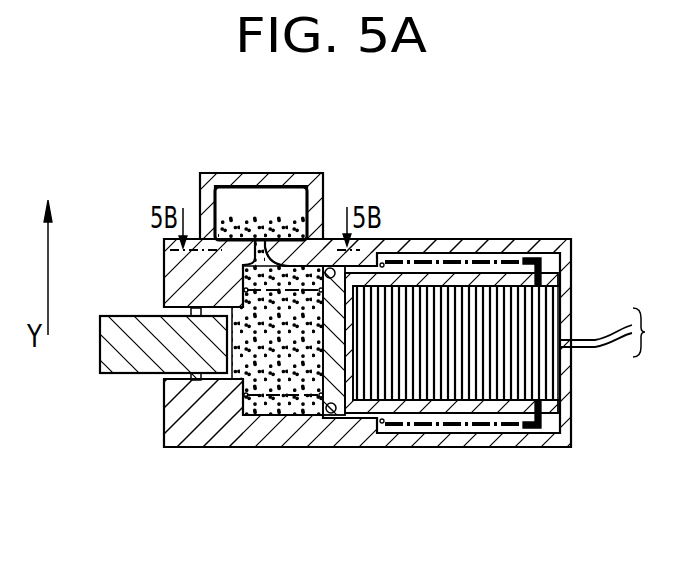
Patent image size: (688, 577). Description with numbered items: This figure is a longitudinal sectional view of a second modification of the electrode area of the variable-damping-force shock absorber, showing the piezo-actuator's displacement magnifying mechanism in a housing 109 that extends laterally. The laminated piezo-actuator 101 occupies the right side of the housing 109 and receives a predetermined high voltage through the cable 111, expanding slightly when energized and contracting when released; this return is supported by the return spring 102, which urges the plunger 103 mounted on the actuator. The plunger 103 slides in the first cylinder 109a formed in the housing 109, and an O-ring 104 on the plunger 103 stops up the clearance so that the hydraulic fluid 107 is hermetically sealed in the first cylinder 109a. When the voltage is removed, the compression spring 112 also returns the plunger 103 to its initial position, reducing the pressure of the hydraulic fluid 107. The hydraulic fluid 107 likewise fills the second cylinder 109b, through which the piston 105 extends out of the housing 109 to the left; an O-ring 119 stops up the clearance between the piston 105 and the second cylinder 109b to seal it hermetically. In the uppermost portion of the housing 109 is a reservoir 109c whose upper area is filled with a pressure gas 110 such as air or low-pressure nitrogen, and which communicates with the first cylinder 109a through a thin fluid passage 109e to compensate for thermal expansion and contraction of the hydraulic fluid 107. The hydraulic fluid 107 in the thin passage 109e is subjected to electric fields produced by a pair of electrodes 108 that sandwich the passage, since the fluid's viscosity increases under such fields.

The piezo-actuator 101 is at (530, 313).
The return spring 102 is at (508, 262).
The plunger 103 is at (392, 405).
The O-ring 104 is at (336, 416).
The piston 105 is at (130, 358).
The hydraulic fluid 107 is at (277, 372).
The electrodes 108 is at (250, 257).
The housing 109 is at (227, 440).
The first cylinder 109a is at (370, 247).
The second cylinder 109b is at (217, 385).
The reservoir 109c is at (302, 208).
The thin fluid passage 109e is at (262, 242).
The pressure gas 110 is at (271, 200).
The cable 111 is at (619, 332).
The compression spring 112 is at (321, 442).
The O-ring 119 is at (197, 381).